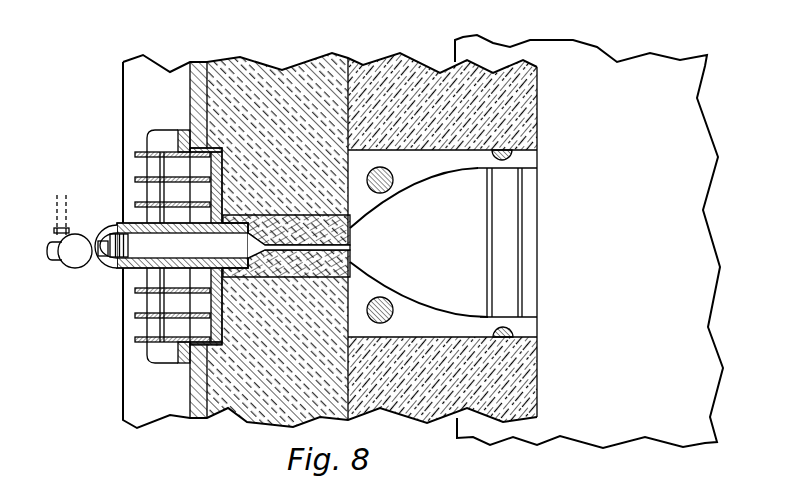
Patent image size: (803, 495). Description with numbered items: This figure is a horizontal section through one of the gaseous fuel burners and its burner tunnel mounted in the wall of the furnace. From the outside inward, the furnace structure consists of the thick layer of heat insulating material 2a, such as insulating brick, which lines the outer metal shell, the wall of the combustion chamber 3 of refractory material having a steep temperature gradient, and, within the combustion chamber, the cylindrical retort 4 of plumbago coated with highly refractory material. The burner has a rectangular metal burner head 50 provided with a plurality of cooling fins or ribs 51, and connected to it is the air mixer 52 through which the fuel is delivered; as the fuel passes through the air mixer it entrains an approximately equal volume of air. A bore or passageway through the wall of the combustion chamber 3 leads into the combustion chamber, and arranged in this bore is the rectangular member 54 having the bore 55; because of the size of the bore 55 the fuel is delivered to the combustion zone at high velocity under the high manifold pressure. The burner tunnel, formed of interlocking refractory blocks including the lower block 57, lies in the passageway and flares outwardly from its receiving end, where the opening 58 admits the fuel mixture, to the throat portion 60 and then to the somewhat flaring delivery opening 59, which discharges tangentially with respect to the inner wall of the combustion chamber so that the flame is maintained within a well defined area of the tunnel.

The layer of heat insulating material 2a is at (263, 63).
The wall of the combustion chamber 3 is at (407, 62).
The cylindrical retort 4 is at (589, 241).
The burner head 50 is at (143, 269).
The cooling fins or ribs 51 is at (137, 204).
The air mixer 52 is at (103, 266).
The rectangular member 54 is at (343, 223).
The bore 55 is at (340, 246).
The lower block 57 is at (478, 208).
The opening in the inlet or receiving end of the burner tunnel 58 is at (352, 259).
The delivery opening 59 is at (508, 250).
The throat portion 60 is at (493, 288).